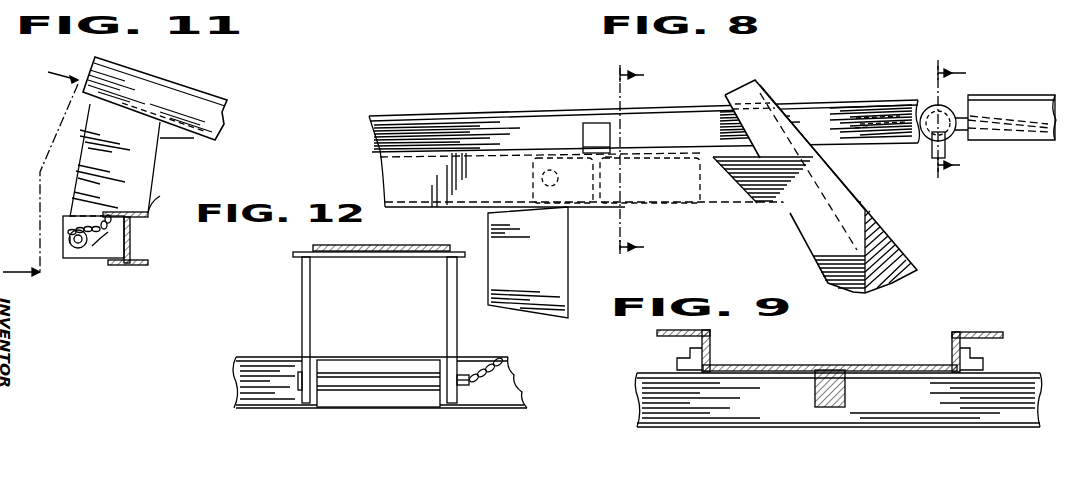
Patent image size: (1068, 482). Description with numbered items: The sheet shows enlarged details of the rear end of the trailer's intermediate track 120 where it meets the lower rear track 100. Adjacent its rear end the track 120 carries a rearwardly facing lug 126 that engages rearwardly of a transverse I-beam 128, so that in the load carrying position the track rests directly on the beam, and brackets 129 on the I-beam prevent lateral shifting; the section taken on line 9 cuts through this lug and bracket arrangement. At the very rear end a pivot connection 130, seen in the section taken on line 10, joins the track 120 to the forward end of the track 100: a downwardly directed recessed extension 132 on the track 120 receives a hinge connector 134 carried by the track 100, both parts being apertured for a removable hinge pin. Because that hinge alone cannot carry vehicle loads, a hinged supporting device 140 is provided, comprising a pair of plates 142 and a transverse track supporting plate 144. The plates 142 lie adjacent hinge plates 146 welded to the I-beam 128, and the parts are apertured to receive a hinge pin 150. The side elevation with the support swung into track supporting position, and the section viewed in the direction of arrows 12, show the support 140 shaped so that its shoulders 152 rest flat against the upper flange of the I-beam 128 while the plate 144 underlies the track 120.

In FIG. 8, the section line 9— 9 is at (639, 161).
In FIG. 8, the section line 10— 10 is at (954, 121).
In FIG. 11, the section arrows 12— 12 is at (40, 163).
In FIG. 8, the lower rear track 100 is at (1000, 98).
In FIG. 11, the intermediate track 120 is at (209, 107).
In FIG. 12, the intermediate track 120 is at (393, 246).
In FIG. 8, the intermediate track 120 is at (522, 118).
In FIG. 9, the intermediate track 120 is at (710, 354).
In FIG. 11, the lug 126 is at (186, 140).
In FIG. 8, the lug 126 is at (623, 160).
In FIG. 9, the lug 126 is at (846, 396).
In FIG. 11, the transverse I-beam 128 is at (132, 250).
In FIG. 8, the transverse I-beam 128 is at (603, 188).
In FIG. 9, the transverse I-beam 128 is at (801, 412).
In FIG. 8, the brackets 129 is at (610, 136).
In FIG. 9, the brackets 129 is at (965, 362).
In FIG. 8, the pivot connection 130 is at (929, 102).
In FIG. 8, the recessed extension 132 is at (900, 130).
In FIG. 8, the hinge connector 134 is at (1003, 128).
In FIG. 11, the hinged supporting device 140 is at (143, 184).
In FIG. 12, the hinged supporting device 140 is at (298, 265).
In FIG. 8, the hinged supporting device 140 is at (553, 281).
In FIG. 11, the plates 142 is at (122, 186).
In FIG. 12, the plates 142 is at (305, 344).
In FIG. 11, the transverse track supporting plate 144 is at (125, 112).
In FIG. 12, the transverse track supporting plate 144 is at (406, 258).
In FIG. 8, the transverse track supporting plate 144 is at (540, 313).
In FIG. 11, the hinge plates 146 is at (103, 250).
In FIG. 12, the hinge plates 146 is at (318, 397).
In FIG. 12, the hinge pin 150 is at (400, 382).
In FIG. 11, the shoulders 152 is at (150, 210).